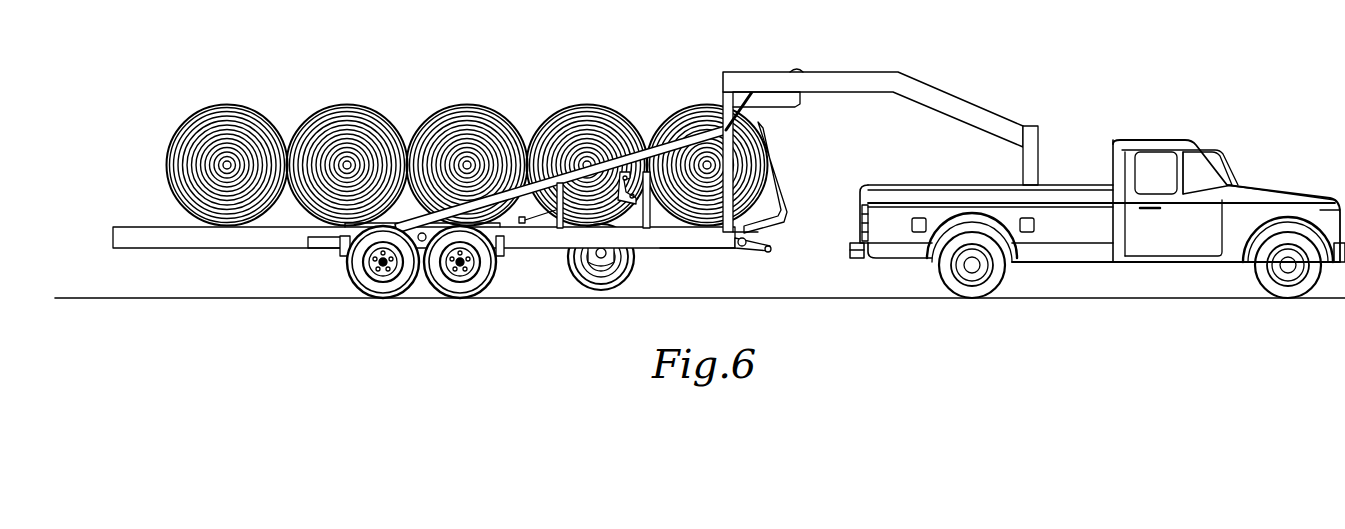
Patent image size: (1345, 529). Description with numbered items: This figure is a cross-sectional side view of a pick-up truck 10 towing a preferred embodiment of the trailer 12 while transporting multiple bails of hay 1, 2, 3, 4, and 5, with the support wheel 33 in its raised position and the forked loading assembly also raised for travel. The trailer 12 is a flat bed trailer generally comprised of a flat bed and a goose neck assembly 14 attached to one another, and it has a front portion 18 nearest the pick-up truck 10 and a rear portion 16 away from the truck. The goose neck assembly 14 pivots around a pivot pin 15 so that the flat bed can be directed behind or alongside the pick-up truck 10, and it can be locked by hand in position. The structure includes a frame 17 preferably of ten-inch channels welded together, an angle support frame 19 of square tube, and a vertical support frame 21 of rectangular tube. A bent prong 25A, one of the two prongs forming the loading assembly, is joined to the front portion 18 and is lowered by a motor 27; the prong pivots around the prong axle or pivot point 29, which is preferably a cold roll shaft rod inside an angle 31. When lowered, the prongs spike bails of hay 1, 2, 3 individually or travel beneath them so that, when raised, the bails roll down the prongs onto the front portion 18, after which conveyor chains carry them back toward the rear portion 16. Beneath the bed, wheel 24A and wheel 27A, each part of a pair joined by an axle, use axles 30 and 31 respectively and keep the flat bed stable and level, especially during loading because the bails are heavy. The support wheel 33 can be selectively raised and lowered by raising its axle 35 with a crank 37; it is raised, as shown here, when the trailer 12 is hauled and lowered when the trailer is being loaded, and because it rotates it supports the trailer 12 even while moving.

The bail of hay 1 is at (200, 108).
The bail of hay 2 is at (328, 108).
The bail of hay 3 is at (456, 108).
The bail of hay 4 is at (576, 108).
The bail of hay 5 is at (692, 108).
The pick-up truck 10 is at (1268, 180).
The trailer 12 is at (460, 136).
The goose neck assembly 14 is at (840, 70).
The pivot pin 15 is at (795, 70).
The rear portion 16 is at (152, 218).
The frame 17 is at (965, 98).
The front portion 18 is at (410, 259).
The angle support frame 19 is at (640, 130).
The vertical support frame 21 is at (740, 160).
The wheel 24A is at (460, 290).
The prong 25A is at (782, 172).
The motor 27 is at (697, 258).
The wheel 27A is at (385, 290).
The pivot point 29 is at (742, 250).
The axle 30 is at (471, 291).
The axle 31 is at (372, 291).
The support wheel 33 is at (578, 286).
The axle 35 is at (528, 228).
The crank 37 is at (595, 108).